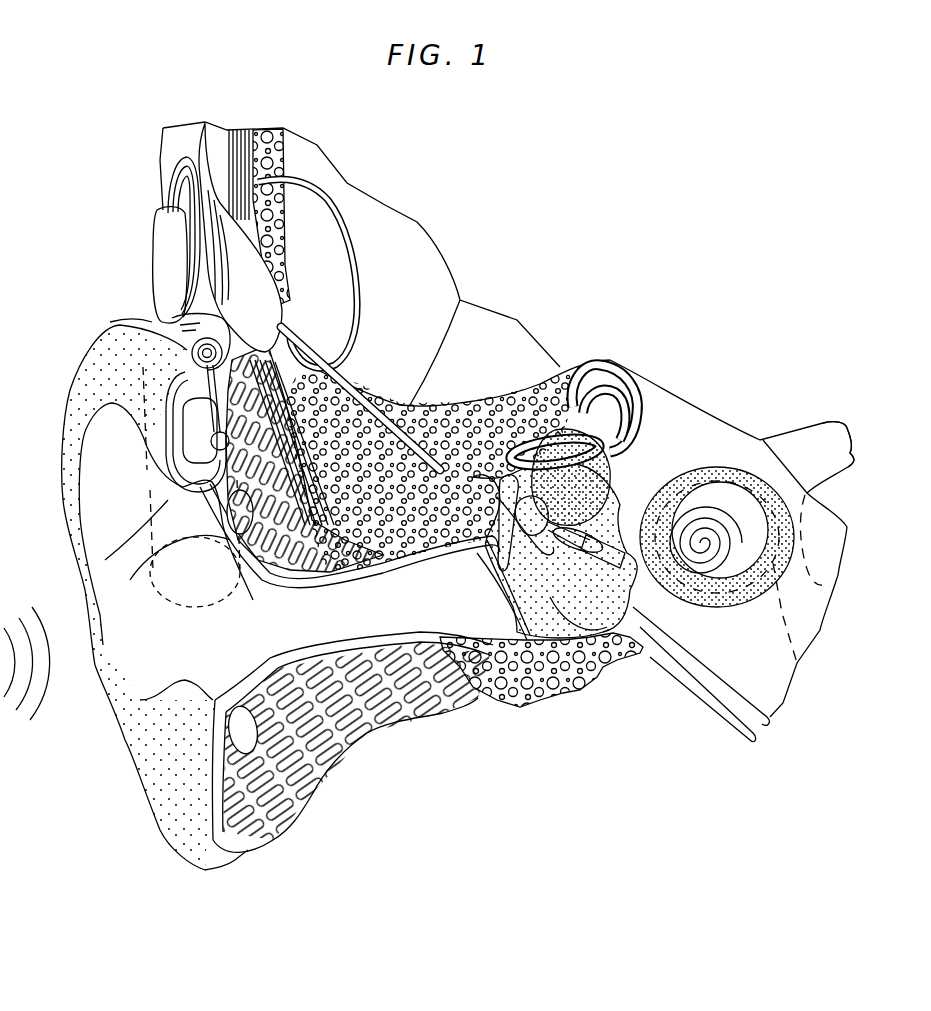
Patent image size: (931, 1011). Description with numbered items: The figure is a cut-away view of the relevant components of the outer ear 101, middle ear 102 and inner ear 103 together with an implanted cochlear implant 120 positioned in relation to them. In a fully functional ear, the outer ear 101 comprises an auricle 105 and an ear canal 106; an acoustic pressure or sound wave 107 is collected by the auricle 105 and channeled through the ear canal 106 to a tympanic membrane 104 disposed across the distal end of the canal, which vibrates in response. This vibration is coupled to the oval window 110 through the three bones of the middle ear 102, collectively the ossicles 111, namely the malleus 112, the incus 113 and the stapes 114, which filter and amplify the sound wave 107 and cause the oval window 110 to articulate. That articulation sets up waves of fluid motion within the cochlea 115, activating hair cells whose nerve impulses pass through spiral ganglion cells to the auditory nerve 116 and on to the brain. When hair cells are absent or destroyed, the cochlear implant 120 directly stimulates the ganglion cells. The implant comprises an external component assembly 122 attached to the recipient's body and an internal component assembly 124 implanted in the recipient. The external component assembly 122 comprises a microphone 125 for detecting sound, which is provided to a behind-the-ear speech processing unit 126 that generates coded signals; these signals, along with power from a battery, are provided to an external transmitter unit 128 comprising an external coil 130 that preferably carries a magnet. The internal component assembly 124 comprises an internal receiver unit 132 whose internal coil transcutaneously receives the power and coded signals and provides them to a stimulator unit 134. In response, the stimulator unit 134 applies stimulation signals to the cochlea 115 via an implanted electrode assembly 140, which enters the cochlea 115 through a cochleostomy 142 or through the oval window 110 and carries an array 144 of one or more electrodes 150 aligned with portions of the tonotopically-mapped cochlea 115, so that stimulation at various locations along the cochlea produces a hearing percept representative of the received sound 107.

The outer ear 101 is at (200, 890).
The middle ear 102 is at (545, 748).
The inner ear 103 is at (767, 782).
The tympanic membrane 104 is at (500, 603).
The auricle 105 is at (148, 800).
The ear canal 106 is at (343, 615).
The sound wave 107 is at (43, 622).
The oval window 110 is at (698, 468).
The ossicles 111 is at (550, 620).
The malleus 112 is at (604, 378).
The incus 113 is at (505, 497).
The stapes 114 is at (595, 500).
The cochlea 115 is at (718, 608).
The auditory nerve 116 is at (823, 437).
The cochlear implant 120 is at (82, 188).
The external component assembly 122 is at (143, 100).
The internal component assembly 124 is at (292, 95).
The microphone 125 is at (115, 333).
The behind-the-ear speech processing unit 126 is at (168, 320).
The external transmitter unit 128 is at (160, 248).
The external coil 130 is at (168, 178).
The internal receiver unit 132 is at (208, 125).
The stimulator unit 134 is at (292, 293).
The electrode assembly 140 is at (462, 300).
The cochleostomy 142 is at (605, 647).
The array 144 is at (803, 672).
The electrodes 150 is at (822, 585).